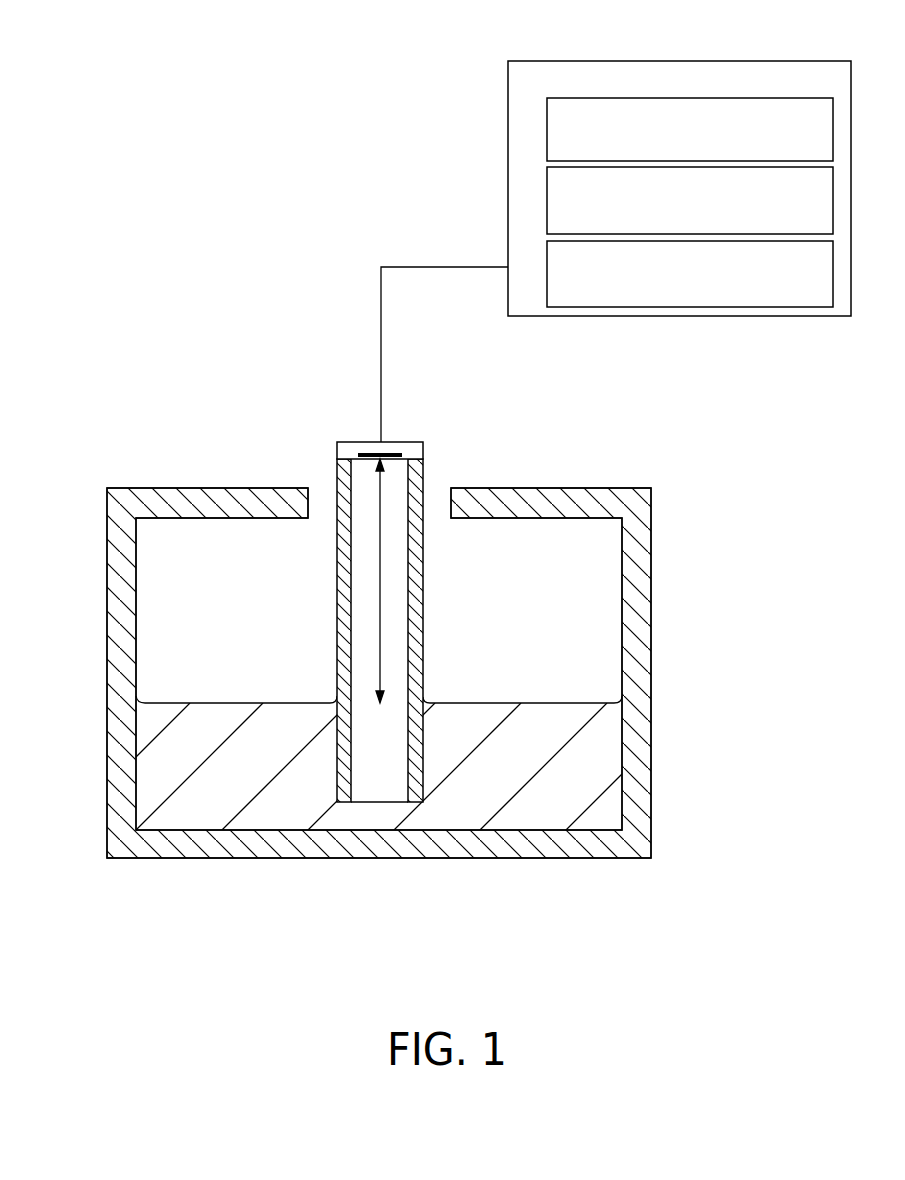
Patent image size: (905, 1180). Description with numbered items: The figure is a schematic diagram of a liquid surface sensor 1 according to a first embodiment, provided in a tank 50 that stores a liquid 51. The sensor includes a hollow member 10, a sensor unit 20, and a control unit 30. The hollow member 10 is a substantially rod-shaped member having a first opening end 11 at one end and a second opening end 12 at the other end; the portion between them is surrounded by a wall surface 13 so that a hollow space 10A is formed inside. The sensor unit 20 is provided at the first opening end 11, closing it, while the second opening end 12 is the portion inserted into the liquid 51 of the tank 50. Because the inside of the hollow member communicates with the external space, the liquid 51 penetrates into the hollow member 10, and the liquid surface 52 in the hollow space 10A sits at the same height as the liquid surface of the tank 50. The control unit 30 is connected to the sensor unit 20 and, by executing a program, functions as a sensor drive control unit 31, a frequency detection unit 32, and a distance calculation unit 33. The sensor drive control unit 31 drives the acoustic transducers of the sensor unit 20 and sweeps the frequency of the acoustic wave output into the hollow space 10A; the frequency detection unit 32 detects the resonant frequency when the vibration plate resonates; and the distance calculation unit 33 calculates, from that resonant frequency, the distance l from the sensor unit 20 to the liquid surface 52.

The liquid surface sensor 1 is at (308, 443).
The hollow member 10 is at (366, 651).
The hollow space 10A is at (367, 590).
The first opening end 11 is at (350, 456).
The second opening end 12 is at (375, 803).
The wall surface 13 is at (398, 531).
The sensor unit 20 is at (411, 441).
The control unit 30 is at (656, 227).
The sensor drive control unit 31 is at (547, 130).
The frequency detection unit 32 is at (547, 197).
The distance calculation unit 33 is at (547, 265).
The tank 50 is at (652, 535).
The liquid 51 is at (158, 780).
The liquid surface 52 is at (352, 692).
The distance l is at (384, 652).